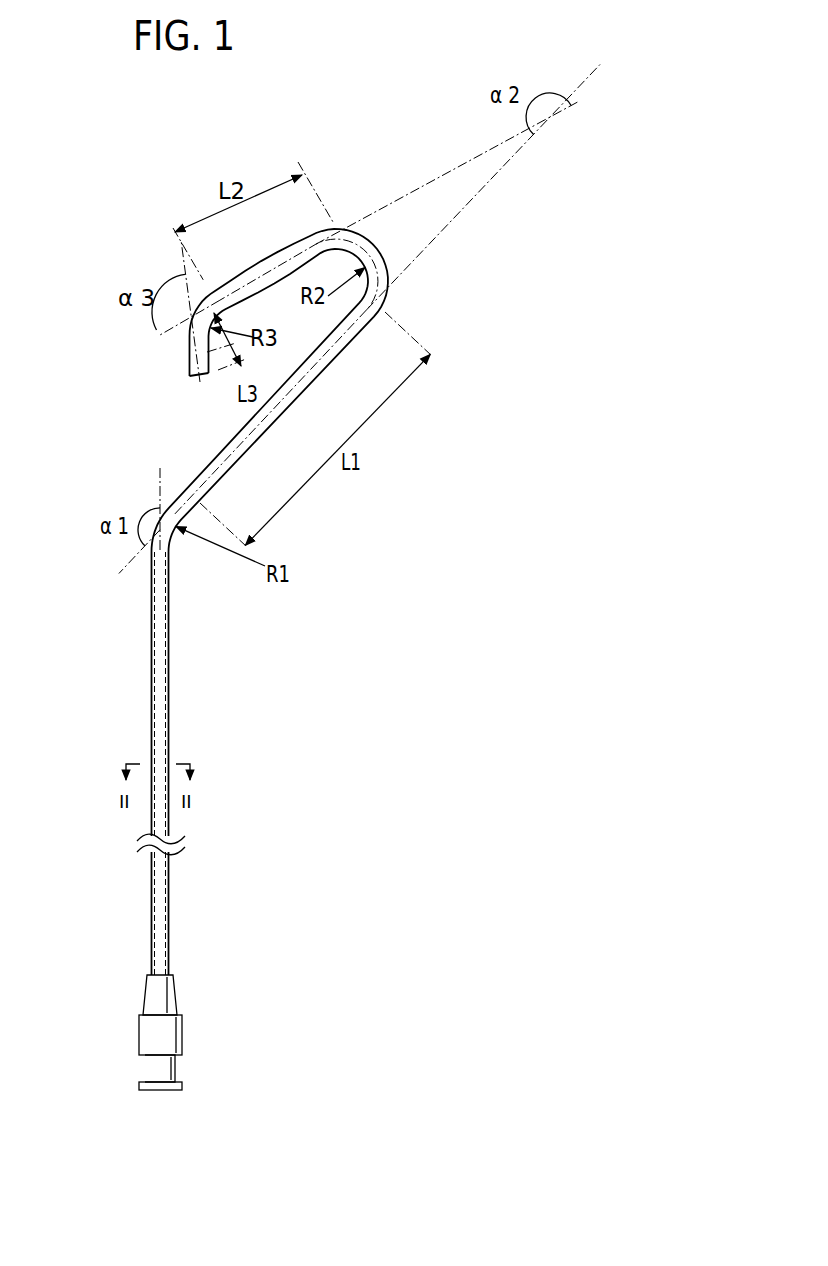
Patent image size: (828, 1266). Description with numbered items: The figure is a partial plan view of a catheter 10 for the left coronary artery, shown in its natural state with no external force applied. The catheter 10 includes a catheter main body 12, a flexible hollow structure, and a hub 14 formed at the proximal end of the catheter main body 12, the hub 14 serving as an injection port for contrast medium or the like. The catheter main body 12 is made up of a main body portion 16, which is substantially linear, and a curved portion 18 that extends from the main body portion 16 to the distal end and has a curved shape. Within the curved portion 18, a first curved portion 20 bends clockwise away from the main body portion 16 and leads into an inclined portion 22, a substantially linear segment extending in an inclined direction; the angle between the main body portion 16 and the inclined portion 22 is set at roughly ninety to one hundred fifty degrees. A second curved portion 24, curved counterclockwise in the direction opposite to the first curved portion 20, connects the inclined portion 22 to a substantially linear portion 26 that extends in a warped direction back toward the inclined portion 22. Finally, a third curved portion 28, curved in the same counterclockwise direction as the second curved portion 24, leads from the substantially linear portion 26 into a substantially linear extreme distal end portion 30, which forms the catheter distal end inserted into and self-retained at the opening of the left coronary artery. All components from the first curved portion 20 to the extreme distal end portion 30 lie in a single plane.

The catheter 10 is at (348, 116).
The catheter main body 12 is at (185, 694).
The hub 14 is at (166, 1001).
The main body portion 16 is at (67, 976).
The curved portion 18 is at (67, 225).
The first curved portion 20 is at (171, 553).
The inclined portion 22 is at (390, 318).
The second curved portion 24 is at (381, 254).
The substantially linear portion 26 is at (317, 217).
The third curved portion 28 is at (187, 327).
The extreme distal end portion 30 is at (184, 356).